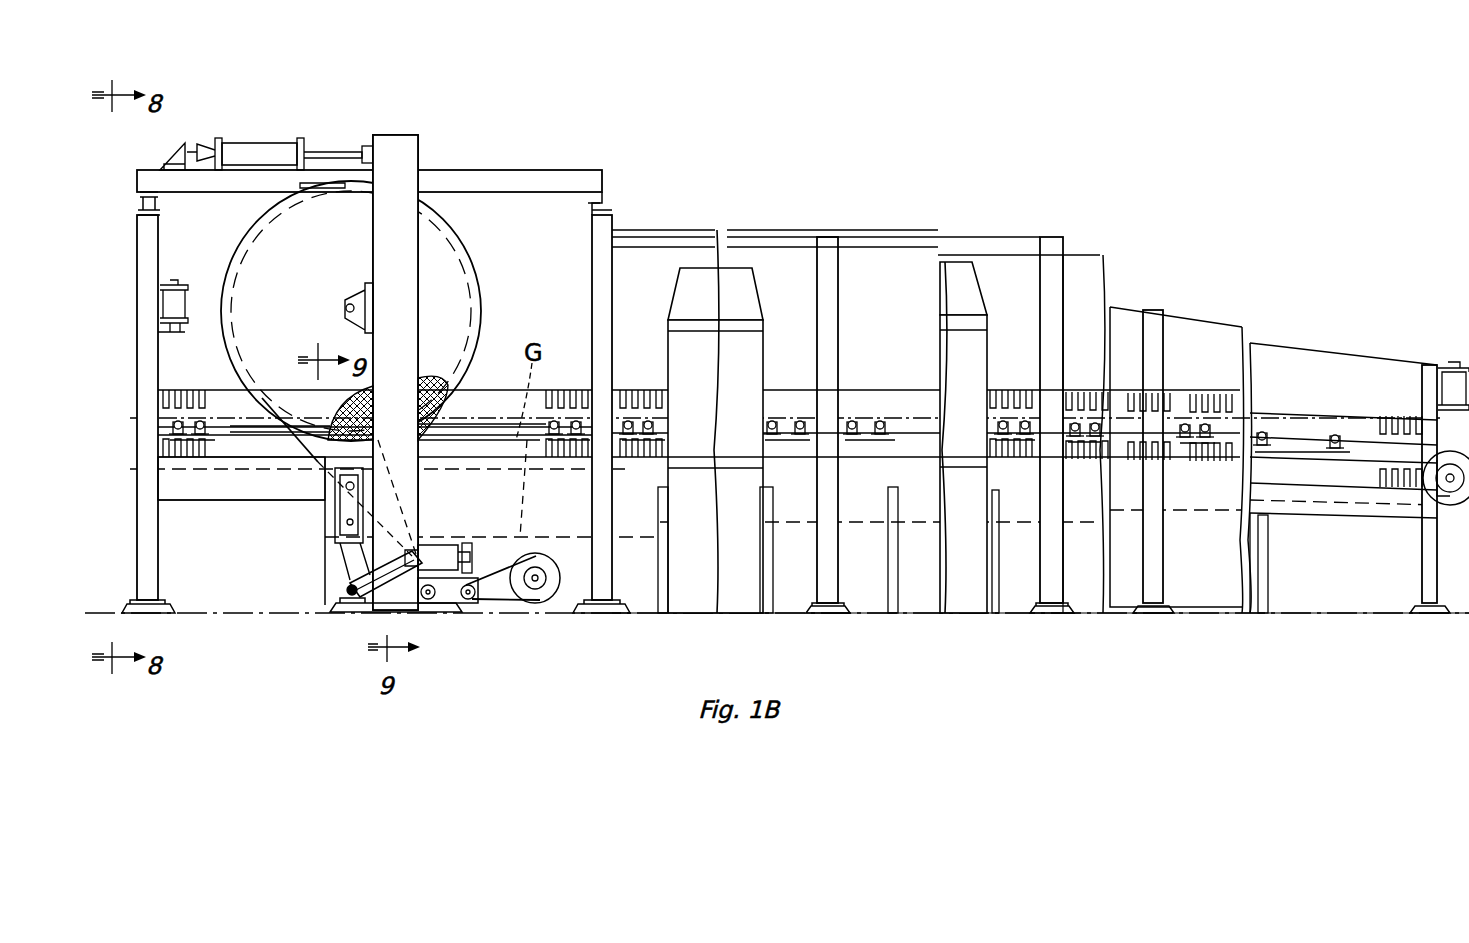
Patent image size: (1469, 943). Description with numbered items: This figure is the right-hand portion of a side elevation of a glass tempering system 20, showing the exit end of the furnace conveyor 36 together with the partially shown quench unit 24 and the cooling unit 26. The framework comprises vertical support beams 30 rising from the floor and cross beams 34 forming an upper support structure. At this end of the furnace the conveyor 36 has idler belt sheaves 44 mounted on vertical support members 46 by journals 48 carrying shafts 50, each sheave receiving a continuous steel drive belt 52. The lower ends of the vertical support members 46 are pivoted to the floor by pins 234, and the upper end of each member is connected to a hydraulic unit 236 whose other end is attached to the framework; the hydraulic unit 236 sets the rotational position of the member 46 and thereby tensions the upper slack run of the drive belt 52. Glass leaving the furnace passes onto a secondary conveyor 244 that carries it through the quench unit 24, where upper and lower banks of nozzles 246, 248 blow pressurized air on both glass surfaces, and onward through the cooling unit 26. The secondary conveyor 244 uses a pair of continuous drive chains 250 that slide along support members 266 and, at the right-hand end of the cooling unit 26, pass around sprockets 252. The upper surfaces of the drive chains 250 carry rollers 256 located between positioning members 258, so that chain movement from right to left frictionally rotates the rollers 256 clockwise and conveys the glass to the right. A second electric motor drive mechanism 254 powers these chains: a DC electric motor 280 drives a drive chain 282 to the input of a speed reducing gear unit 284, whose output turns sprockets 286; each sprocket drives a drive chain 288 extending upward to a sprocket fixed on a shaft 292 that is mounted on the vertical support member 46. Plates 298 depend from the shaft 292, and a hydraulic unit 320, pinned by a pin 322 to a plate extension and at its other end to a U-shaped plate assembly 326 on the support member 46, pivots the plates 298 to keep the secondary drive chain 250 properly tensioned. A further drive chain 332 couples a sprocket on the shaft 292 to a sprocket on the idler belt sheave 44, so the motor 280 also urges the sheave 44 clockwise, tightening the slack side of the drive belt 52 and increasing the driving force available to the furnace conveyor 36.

The glass tempering system 20 is at (428, 90).
The quench unit 24 is at (206, 514).
The cooling unit 26 is at (811, 204).
The vertical support beams 30 is at (152, 248).
The cross beams 34 is at (142, 198).
The conveyor 36 is at (460, 236).
The idler belt sheaves 44 is at (474, 264).
The vertical support members 46 is at (400, 333).
The journals 48 is at (362, 290).
The shafts 50 is at (343, 308).
The drive belts 52 is at (305, 186).
The hydraulic unit 236 is at (275, 150).
The secondary conveyor 244 is at (478, 414).
The upper bank of nozzles 246 is at (163, 400).
The lower bank of nozzles 248 is at (158, 452).
The drive chains 250 is at (527, 442).
The sprockets 252 is at (1445, 505).
The second electric motor drive mechanism 254 is at (557, 552).
The rollers 256 is at (205, 425).
The positioning members 258 is at (196, 440).
The support members 266 is at (430, 437).
The DC electric motor 280 is at (560, 592).
The drive chain 282 is at (508, 608).
The speed reducing gear unit 284 is at (446, 602).
The sprockets 286 is at (430, 602).
The drive chain 288 is at (413, 590).
The shaft 292 is at (346, 495).
The plates 298 is at (345, 541).
The hydraulic unit 320 is at (430, 552).
The pin 322 is at (355, 560).
The U-shaped plate assembly 326 is at (462, 552).
The drive chain 332 is at (292, 450).
The pins 234 is at (352, 598).